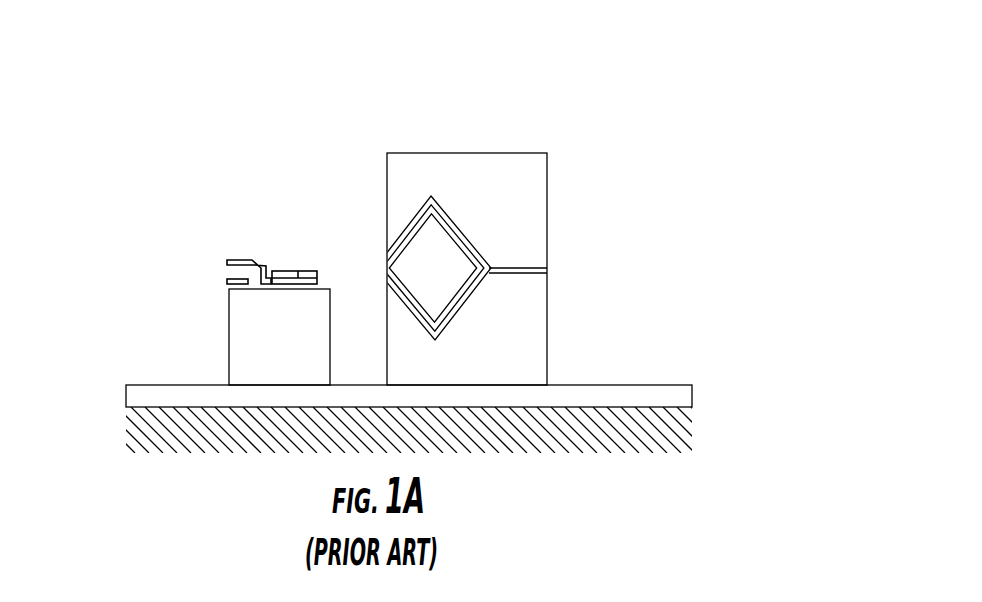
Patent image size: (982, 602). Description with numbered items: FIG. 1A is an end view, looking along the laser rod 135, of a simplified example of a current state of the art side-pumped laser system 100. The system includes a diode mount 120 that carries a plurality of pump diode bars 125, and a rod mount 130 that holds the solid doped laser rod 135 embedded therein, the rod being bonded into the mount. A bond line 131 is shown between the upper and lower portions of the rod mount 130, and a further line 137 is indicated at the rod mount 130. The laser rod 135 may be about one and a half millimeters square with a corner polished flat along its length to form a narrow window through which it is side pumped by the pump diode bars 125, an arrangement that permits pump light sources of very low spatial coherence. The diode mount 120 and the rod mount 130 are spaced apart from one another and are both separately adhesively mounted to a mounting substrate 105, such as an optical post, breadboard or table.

The side-pumped laser system 100 is at (604, 64).
The mounting substrate 105 is at (137, 398).
The diode mount 120 is at (221, 327).
The pump diode bars 125 is at (263, 248).
The rod mount 130 is at (551, 248).
The bond line 131 is at (445, 203).
The laser rod 135 is at (447, 222).
The bond line 137 is at (397, 240).